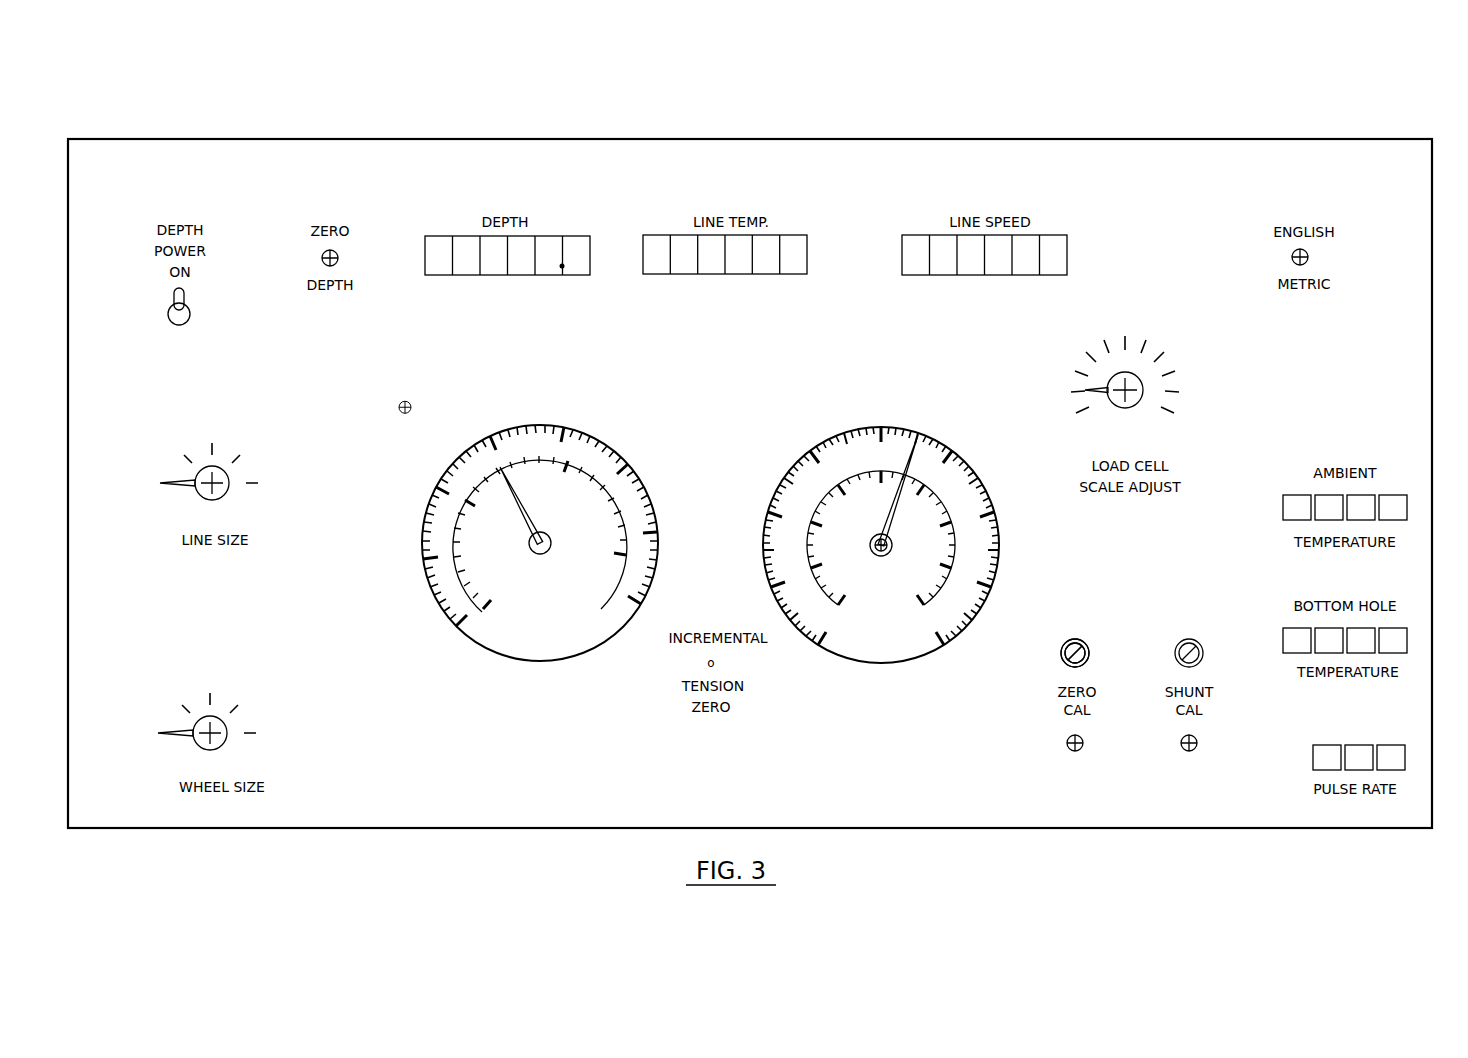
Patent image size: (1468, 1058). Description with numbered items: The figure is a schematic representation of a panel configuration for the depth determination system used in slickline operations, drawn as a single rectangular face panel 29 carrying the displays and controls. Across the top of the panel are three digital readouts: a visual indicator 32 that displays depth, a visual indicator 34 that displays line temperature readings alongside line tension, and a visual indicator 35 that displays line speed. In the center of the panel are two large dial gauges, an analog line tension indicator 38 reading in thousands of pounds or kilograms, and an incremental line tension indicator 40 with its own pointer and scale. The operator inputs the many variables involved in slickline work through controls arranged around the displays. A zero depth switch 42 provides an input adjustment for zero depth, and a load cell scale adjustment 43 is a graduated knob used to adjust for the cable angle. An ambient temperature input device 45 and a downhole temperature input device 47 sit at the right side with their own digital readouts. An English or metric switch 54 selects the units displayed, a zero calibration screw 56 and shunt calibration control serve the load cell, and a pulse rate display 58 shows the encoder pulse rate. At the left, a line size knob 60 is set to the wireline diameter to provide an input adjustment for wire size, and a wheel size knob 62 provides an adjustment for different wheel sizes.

The control panel 29 is at (704, 378).
The visual indicator 32 is at (512, 202).
The visual indicator 34 is at (763, 202).
The visual indicator 35 is at (1003, 203).
The analog line tension indicator 38 is at (516, 655).
The incremental line tension indicator 40 is at (840, 645).
The zero depth switch 42 is at (332, 203).
The load cell scale adjustment 43 is at (1232, 368).
The ambient temperature input device 45 is at (1348, 458).
The downhole temperature input device 47 is at (1295, 693).
The english/metric button 54 is at (1292, 213).
The zero cal screw 56 is at (1080, 642).
The pulse rate display 58 is at (1408, 775).
The line size knob 60 is at (178, 507).
The wheel size knob 62 is at (283, 728).